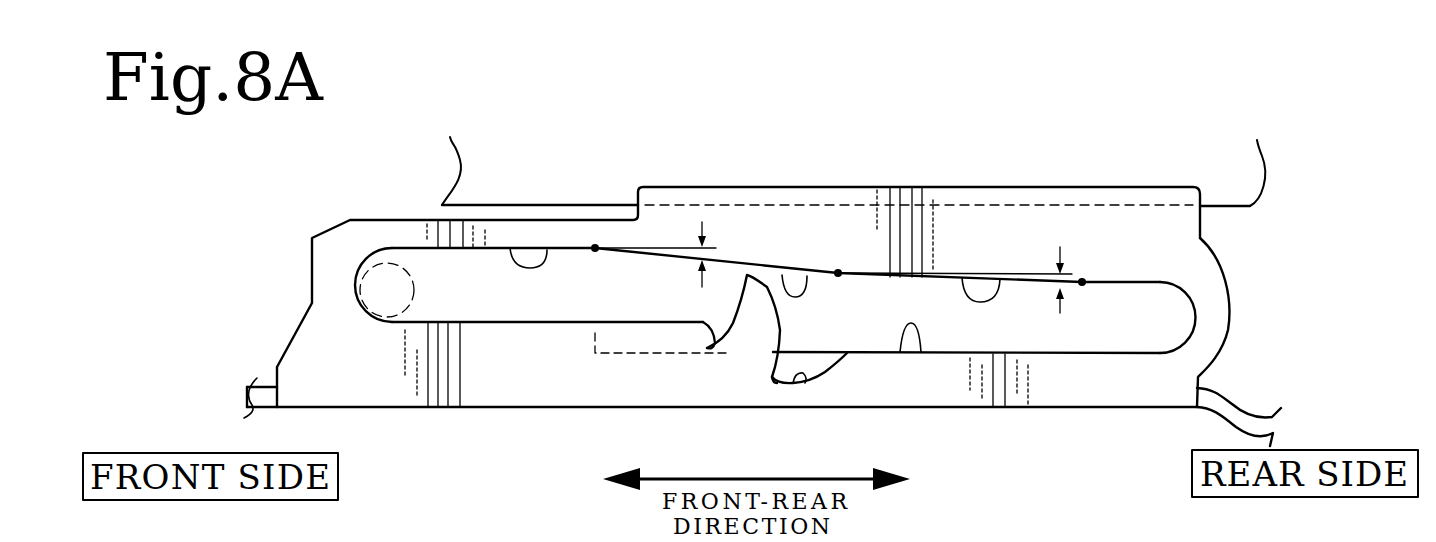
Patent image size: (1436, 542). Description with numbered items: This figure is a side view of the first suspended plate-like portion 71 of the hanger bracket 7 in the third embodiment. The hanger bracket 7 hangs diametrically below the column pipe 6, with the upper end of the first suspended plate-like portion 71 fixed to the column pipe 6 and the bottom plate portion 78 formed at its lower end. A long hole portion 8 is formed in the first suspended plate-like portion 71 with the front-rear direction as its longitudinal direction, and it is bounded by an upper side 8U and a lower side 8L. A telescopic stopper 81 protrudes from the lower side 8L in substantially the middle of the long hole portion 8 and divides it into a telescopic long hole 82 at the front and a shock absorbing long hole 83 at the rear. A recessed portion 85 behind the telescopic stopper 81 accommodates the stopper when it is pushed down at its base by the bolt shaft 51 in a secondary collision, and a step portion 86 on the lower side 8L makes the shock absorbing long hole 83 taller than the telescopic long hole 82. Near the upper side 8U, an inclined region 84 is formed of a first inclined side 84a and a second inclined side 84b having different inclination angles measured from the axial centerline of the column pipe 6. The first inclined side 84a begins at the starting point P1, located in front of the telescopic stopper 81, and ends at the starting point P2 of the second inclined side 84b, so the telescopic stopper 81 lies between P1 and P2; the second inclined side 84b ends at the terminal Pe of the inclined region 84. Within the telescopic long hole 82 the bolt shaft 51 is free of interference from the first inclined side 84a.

The column pipe 6 is at (1243, 162).
The hanger bracket 7 is at (298, 267).
The long hole portion 8 is at (508, 297).
The upper side 8U is at (547, 250).
The lower side 8L is at (921, 352).
The bolt shaft 51 is at (414, 286).
The first suspended plate-like portion 71 is at (1208, 342).
The bottom plate portion 78 is at (363, 405).
The telescopic stopper 81 is at (762, 303).
The telescopic long hole 82 is at (575, 300).
The shock absorbing long hole 83 is at (1082, 327).
The inclined region 84 is at (1073, 143).
The first inclined side 84a is at (807, 276).
The second inclined side 84b is at (1002, 274).
The recessed portion 85 is at (800, 377).
The step portion 86 is at (708, 350).
The starting point P1 is at (596, 266).
The starting point P2 is at (849, 290).
The terminal Pe is at (1093, 300).